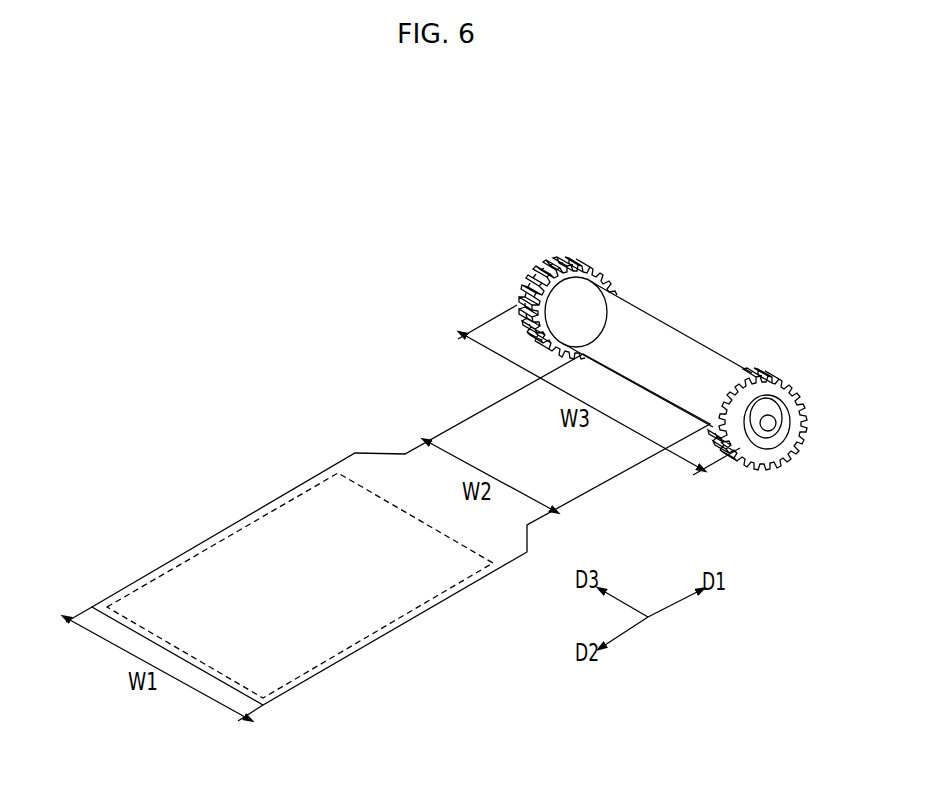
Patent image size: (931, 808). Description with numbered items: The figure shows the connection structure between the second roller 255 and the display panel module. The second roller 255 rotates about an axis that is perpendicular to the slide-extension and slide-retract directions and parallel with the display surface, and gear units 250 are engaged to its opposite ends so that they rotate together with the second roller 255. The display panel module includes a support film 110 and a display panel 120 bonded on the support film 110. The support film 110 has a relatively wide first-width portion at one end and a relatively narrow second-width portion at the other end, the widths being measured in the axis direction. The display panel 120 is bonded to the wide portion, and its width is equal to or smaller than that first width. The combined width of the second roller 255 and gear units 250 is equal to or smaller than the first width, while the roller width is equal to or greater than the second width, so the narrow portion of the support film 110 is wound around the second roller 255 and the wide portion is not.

The support film 110 is at (405, 627).
The display panel 120 is at (316, 676).
The gear units 250 is at (549, 252).
The second roller 255 is at (660, 333).